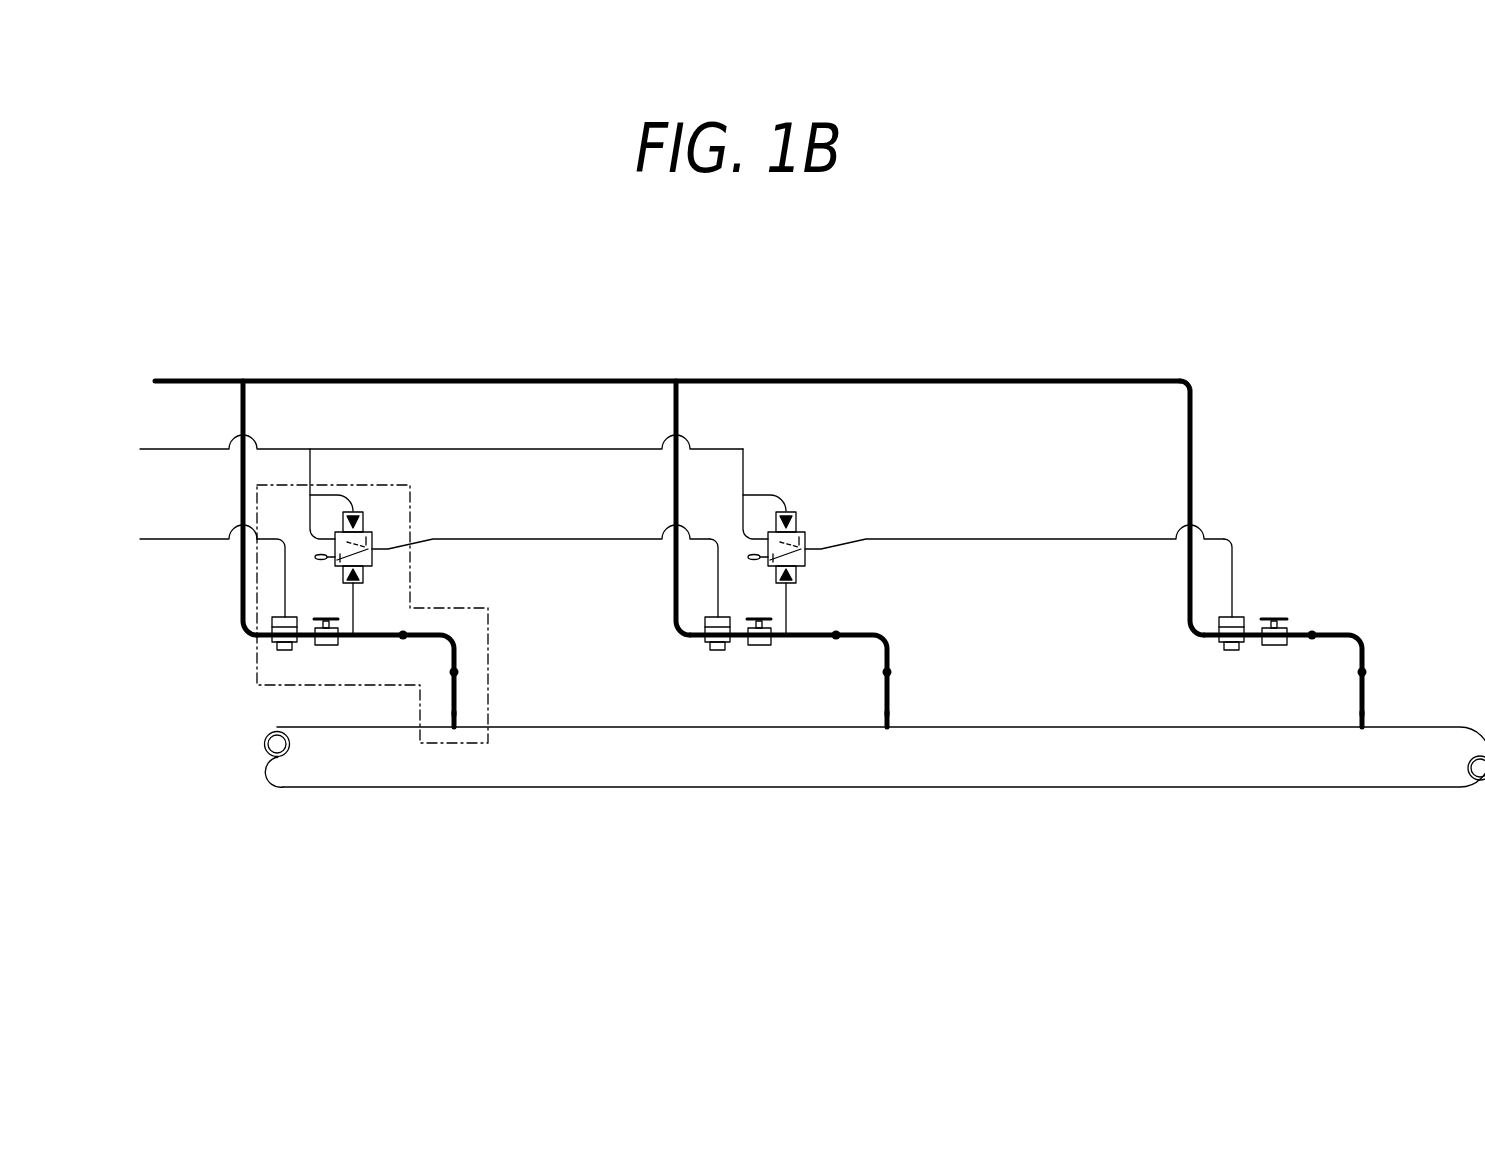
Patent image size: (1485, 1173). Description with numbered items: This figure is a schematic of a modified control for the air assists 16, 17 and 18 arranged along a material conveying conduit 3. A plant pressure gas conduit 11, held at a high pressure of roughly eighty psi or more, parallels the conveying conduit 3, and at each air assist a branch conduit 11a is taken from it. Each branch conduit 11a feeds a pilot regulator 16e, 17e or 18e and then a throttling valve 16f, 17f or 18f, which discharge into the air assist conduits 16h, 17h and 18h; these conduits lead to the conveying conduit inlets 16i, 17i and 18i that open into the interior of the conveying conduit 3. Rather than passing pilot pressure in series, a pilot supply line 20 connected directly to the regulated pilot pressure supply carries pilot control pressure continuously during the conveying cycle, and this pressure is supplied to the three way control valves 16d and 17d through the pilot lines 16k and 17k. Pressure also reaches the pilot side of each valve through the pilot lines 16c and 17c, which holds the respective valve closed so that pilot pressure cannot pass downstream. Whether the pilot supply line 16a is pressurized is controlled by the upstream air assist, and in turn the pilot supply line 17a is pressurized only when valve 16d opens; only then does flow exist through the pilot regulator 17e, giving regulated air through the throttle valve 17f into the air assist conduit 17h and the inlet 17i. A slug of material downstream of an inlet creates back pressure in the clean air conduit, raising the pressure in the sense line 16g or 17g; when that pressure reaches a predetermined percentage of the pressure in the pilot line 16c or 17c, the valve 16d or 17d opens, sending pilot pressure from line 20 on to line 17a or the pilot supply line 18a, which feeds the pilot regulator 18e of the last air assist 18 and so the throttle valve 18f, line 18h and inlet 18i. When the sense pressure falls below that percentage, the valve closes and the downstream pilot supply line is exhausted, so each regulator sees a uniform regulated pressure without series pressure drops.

The material conveying conduit 3 is at (1425, 787).
The plant pressure gas conduit 11 is at (268, 381).
The branch conduit 11a is at (240, 487).
The pilot supply line 20 is at (197, 449).
The air assist 16 is at (325, 685).
The pilot supply line 16a is at (177, 540).
The pilot line 16c is at (337, 495).
The three way control valve 16d is at (371, 532).
The pilot regulator 16e is at (277, 650).
The throttling valve 16f is at (315, 645).
The sense line 16g is at (353, 608).
The air assist conduit 16h is at (455, 693).
The conveying conduit inlet 16i is at (460, 727).
The pilot line 16k is at (312, 468).
The air assist 17 is at (762, 685).
The pilot supply line 17a is at (637, 539).
The pilot line 17c is at (768, 492).
The three way control valve 17d is at (804, 532).
The pilot regulator 17e is at (710, 650).
The throttling valve 17f is at (760, 645).
The sense line 17g is at (787, 605).
The air assist conduit 17h is at (890, 683).
The conveying conduit inlet 17i is at (892, 728).
The pilot line 17k is at (743, 468).
The air assist 18 is at (1278, 685).
The pilot supply line 18a is at (1025, 539).
The pilot regulator 18e is at (1228, 650).
The throttling valve 18f is at (1274, 645).
The air assist conduit 18h is at (1365, 680).
The air assist inlet 18i is at (1365, 726).